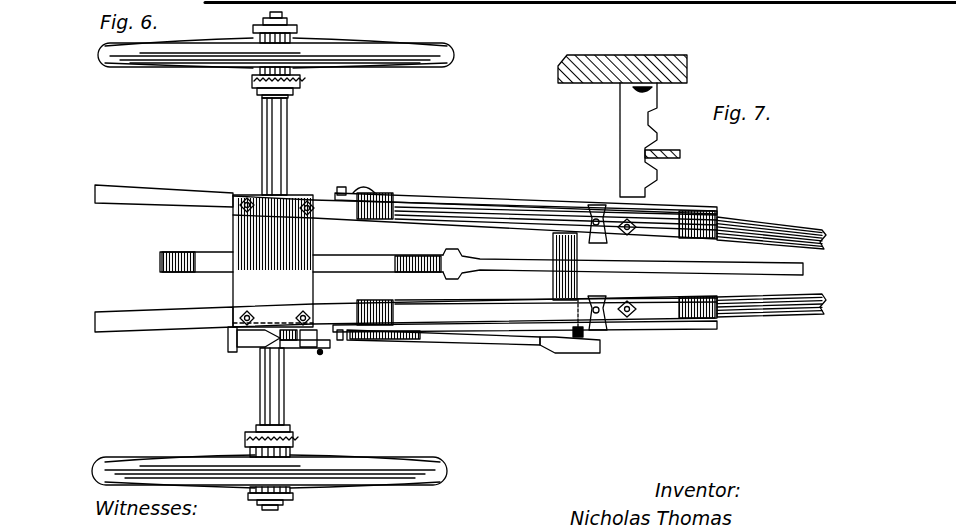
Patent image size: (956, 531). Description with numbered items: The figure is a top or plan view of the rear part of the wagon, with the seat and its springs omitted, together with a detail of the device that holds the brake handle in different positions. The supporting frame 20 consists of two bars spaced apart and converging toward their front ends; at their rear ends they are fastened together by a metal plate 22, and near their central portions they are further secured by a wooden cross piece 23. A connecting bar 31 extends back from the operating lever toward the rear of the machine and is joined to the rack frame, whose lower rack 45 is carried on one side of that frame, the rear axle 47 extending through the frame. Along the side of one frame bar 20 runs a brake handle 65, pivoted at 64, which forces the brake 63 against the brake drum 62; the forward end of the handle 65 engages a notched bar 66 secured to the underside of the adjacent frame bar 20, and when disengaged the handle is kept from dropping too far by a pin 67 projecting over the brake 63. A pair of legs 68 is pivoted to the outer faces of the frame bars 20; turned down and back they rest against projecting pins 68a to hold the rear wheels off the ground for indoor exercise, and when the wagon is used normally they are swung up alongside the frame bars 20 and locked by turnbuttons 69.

In FIG. 6, the supporting frame 20 is at (812, 258).
In FIG. 7, the supporting frame 20 is at (687, 67).
In FIG. 6, the metal plate 22 is at (305, 292).
In FIG. 6, the wooden cross piece 23 is at (557, 280).
In FIG. 6, the connecting bar 31 is at (642, 246).
In FIG. 6, the rack 45 is at (373, 258).
In FIG. 6, the rear axle 47 is at (285, 133).
In FIG. 6, the brake drum 62 is at (284, 348).
In FIG. 6, the brake 63 is at (256, 346).
In FIG. 6, the pivot 64 is at (318, 353).
In FIG. 6, the brake handle 65 is at (463, 343).
In FIG. 7, the brake handle 65 is at (670, 150).
In FIG. 7, the notched bar 66 is at (637, 140).
In FIG. 6, the pin 67 is at (233, 350).
In FIG. 6, the legs 68 is at (504, 203).
In FIG. 6, the projecting pins 68a is at (344, 184).
In FIG. 6, the turnbuttons 69 is at (598, 238).